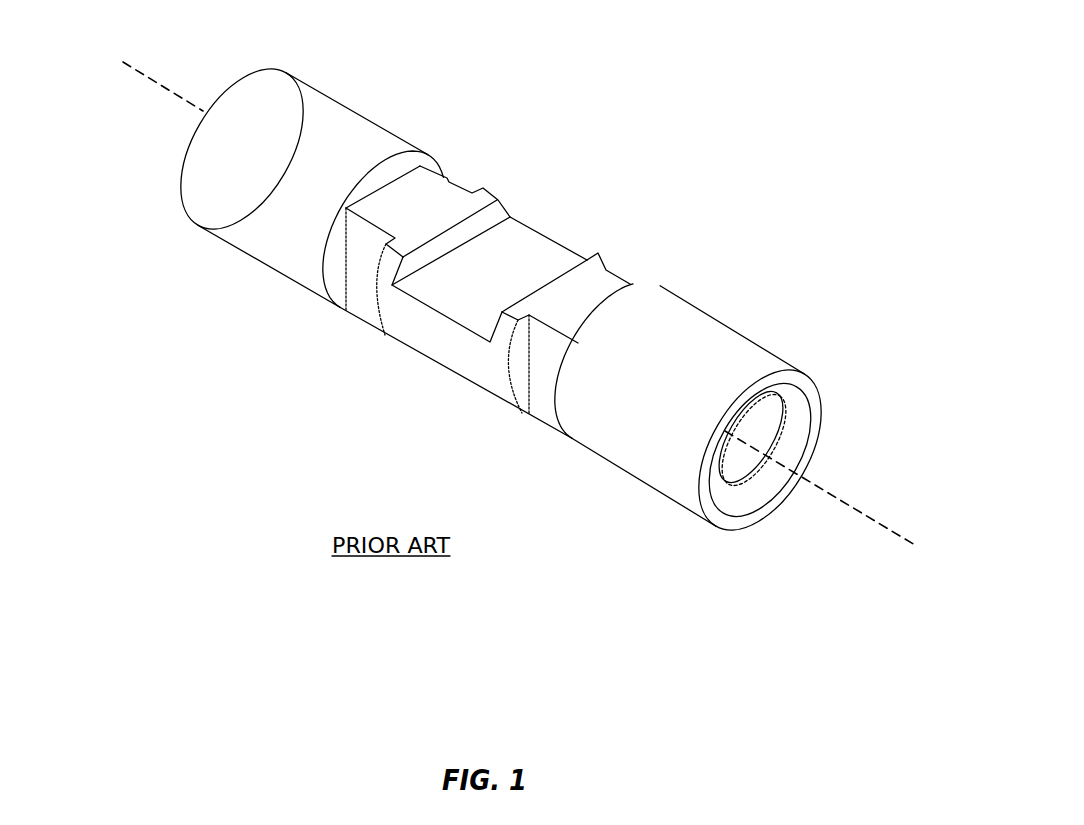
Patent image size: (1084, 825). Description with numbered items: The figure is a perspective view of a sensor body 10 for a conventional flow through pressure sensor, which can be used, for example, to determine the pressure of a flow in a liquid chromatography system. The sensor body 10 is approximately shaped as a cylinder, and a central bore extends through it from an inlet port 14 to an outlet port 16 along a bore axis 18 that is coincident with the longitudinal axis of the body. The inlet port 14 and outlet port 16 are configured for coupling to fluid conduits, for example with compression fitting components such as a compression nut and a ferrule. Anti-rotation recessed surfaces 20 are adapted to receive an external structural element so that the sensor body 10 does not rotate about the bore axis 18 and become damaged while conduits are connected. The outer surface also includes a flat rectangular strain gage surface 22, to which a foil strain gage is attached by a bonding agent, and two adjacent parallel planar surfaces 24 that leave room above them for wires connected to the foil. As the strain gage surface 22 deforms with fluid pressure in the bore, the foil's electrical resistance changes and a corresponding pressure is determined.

The sensor body 10 is at (690, 105).
The inlet port 14 is at (822, 500).
The outlet port 16 is at (173, 131).
The bore axis 18 is at (158, 85).
The anti-rotation recessed surfaces 20 is at (447, 178).
The strain gage surface 22 is at (512, 250).
The parallel planar surfaces 24 is at (455, 200).